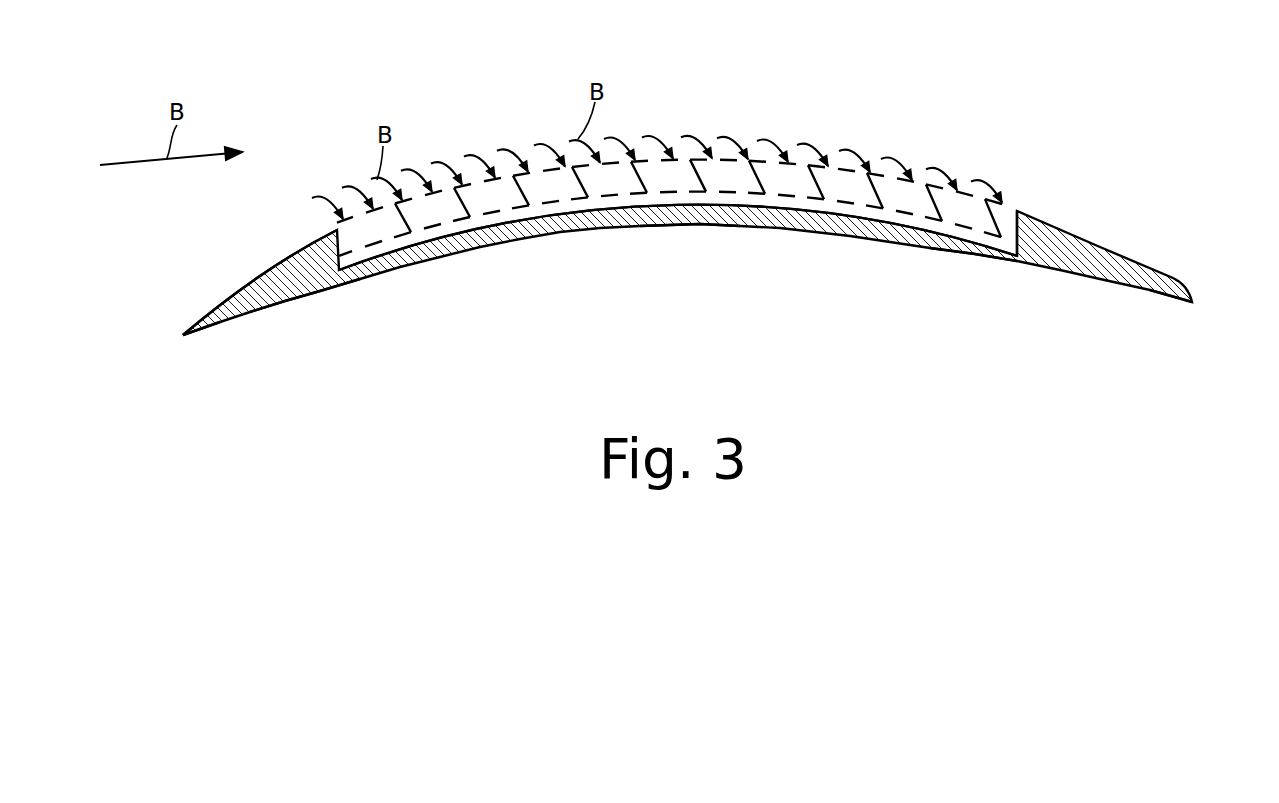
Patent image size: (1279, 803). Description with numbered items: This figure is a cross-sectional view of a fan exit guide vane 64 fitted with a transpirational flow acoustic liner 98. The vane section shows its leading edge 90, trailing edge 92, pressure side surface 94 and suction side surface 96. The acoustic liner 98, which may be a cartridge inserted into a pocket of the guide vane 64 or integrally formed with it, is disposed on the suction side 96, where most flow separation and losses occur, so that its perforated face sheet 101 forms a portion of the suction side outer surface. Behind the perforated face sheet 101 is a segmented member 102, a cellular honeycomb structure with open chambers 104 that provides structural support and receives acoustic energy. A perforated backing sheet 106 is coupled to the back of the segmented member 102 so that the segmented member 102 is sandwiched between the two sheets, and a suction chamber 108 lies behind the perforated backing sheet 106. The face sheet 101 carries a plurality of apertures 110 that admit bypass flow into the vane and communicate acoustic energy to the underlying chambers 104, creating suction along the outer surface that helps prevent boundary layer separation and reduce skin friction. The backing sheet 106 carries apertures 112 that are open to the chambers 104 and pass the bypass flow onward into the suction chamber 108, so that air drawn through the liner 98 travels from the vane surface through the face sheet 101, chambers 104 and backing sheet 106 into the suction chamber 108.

The transpirational flow acoustic liner 98 is at (812, 98).
The fan exit guide vane 64 is at (636, 216).
The leading edge 90 is at (183, 334).
The trailing edge 92 is at (1192, 302).
The pressure side surface 94 is at (308, 297).
The suction side surface 96 is at (303, 243).
The perforated face sheet 101 is at (488, 172).
The segmented member 102 is at (1004, 225).
The chambers 104 is at (488, 198).
The perforated backing sheet 106 is at (548, 205).
The suction chamber 108 is at (697, 198).
The apertures 110 is at (1002, 237).
The apertures 112 is at (978, 227).